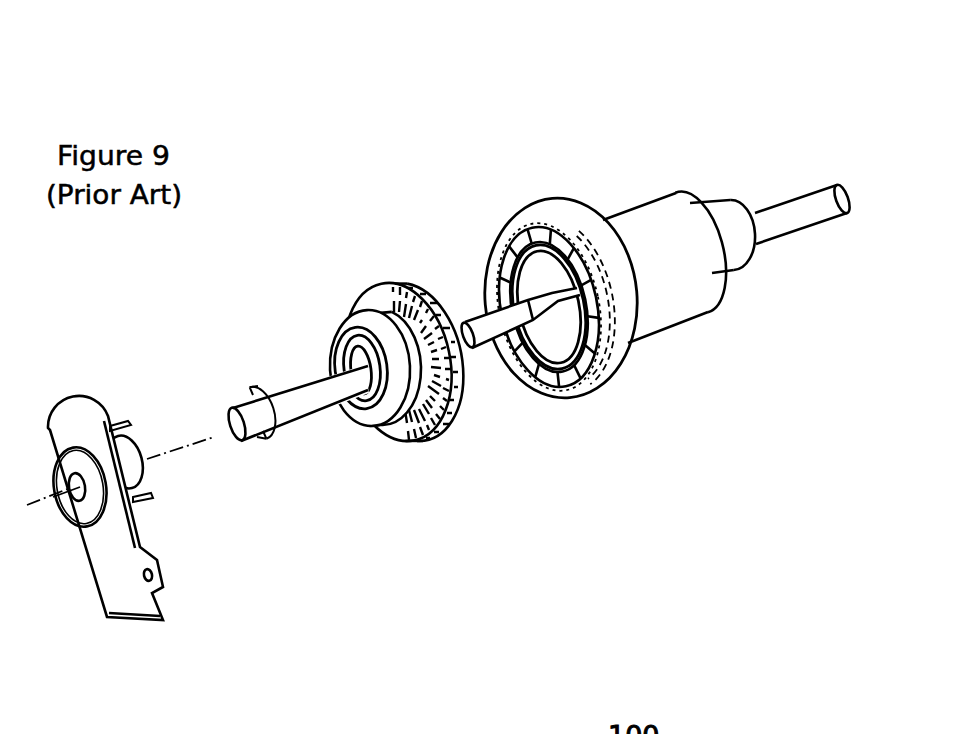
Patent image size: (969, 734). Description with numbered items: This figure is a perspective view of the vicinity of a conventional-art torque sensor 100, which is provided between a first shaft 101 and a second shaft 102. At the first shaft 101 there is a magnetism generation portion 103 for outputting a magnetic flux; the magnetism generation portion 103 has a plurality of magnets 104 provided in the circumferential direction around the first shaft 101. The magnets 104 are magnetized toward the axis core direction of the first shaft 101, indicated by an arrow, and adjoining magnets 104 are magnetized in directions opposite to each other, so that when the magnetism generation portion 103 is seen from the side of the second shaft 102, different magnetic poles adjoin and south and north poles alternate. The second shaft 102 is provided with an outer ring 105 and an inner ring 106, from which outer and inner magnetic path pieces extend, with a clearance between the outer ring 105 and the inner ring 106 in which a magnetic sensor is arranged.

The torque sensor 100 is at (658, 112).
The first shaft 101 is at (767, 224).
The second shaft 102 is at (297, 403).
The magnetism generation portion 103 is at (579, 198).
The magnets 104 is at (506, 233).
The outer ring 105 is at (343, 325).
The inner ring 106 is at (350, 352).